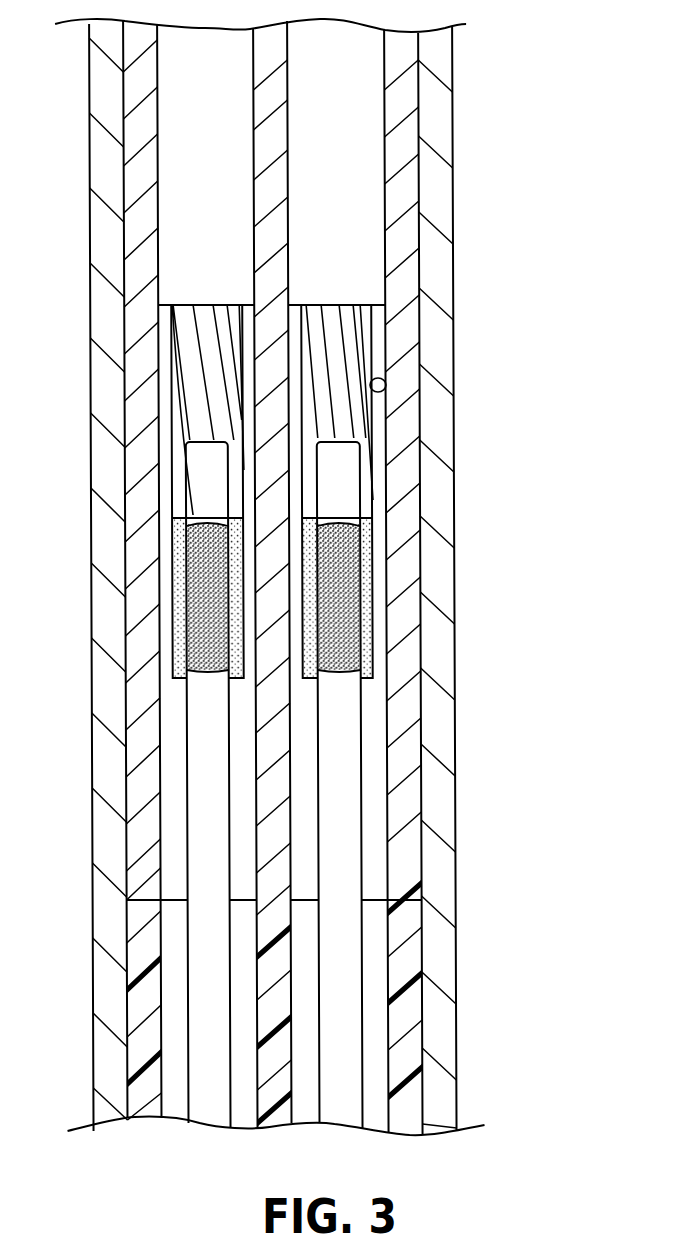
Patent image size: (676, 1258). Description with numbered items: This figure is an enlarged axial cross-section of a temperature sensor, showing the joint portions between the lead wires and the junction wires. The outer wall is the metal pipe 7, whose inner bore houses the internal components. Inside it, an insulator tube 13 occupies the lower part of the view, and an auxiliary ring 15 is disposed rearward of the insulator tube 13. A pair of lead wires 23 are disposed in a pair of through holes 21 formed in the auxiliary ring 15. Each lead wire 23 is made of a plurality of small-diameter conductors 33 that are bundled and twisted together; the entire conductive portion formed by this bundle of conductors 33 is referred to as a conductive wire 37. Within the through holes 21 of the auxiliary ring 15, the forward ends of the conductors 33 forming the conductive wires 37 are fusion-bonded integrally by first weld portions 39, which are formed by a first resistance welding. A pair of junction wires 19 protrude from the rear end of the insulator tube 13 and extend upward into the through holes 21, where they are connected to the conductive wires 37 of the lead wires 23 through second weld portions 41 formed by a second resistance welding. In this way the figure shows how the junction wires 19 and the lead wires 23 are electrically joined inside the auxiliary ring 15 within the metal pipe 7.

The metal pipe 7 is at (438, 867).
The insulator tube 13 is at (403, 967).
The auxiliary ring 15 is at (397, 103).
The junction wires 19 is at (340, 766).
The through holes 21 is at (386, 382).
The lead wires 23 is at (355, 163).
The conductors 33 is at (363, 425).
The conductive wire 37 is at (326, 338).
The first weld portions 39 is at (370, 657).
The second weld portions 41 is at (330, 551).